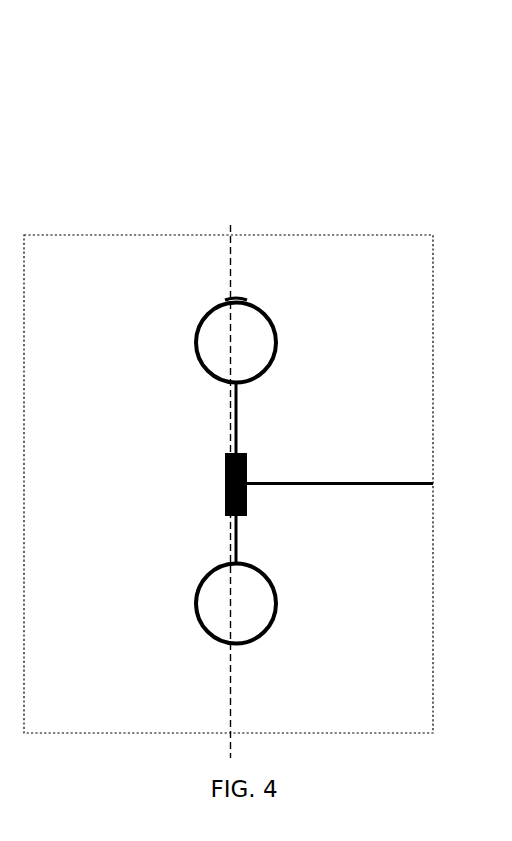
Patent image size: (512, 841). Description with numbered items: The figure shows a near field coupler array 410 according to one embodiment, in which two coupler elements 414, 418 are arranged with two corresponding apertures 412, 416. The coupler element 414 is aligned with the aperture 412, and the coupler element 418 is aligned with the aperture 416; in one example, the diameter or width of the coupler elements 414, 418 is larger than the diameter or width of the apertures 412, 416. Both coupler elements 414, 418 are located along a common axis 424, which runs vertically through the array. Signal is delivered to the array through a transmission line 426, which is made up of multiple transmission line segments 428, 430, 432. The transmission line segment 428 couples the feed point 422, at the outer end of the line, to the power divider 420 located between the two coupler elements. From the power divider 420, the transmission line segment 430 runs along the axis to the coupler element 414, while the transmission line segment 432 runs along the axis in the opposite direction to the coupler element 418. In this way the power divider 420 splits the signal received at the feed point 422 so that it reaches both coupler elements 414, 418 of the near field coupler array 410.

The near field coupler array 410 is at (250, 212).
The aperture 412 is at (210, 364).
The coupler element 414 is at (232, 299).
The aperture 416 is at (211, 626).
The coupler element 418 is at (196, 604).
The power divider 420 is at (225, 484).
The feed point 422 is at (433, 483).
The axis 424 is at (230, 757).
The transmission line 426 is at (350, 472).
The transmission line segment 428 is at (376, 488).
The transmission line segment 430 is at (239, 415).
The transmission line segment 432 is at (239, 534).